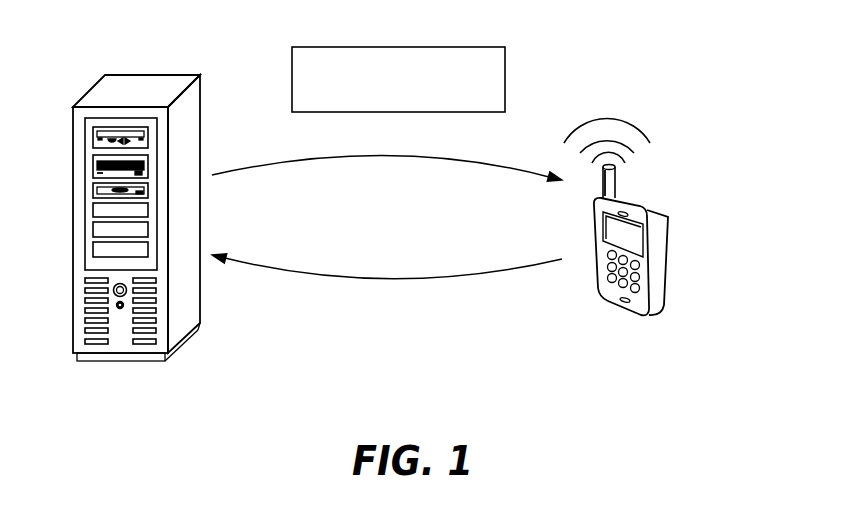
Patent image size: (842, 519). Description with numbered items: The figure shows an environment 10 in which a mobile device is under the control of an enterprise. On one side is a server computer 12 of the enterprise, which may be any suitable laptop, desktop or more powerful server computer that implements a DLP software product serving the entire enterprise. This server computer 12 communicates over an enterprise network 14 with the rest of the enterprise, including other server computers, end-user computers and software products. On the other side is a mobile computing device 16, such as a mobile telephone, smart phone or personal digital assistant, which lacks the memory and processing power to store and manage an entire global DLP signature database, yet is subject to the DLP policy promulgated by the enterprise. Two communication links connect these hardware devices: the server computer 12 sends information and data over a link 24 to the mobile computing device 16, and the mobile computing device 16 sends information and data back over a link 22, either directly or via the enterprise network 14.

The environment 10 is at (718, 25).
The server computer 12 is at (155, 88).
The enterprise network 14 is at (505, 62).
The mobile computing device 16 is at (665, 247).
The communication link 22 is at (386, 278).
The communication link 24 is at (386, 157).